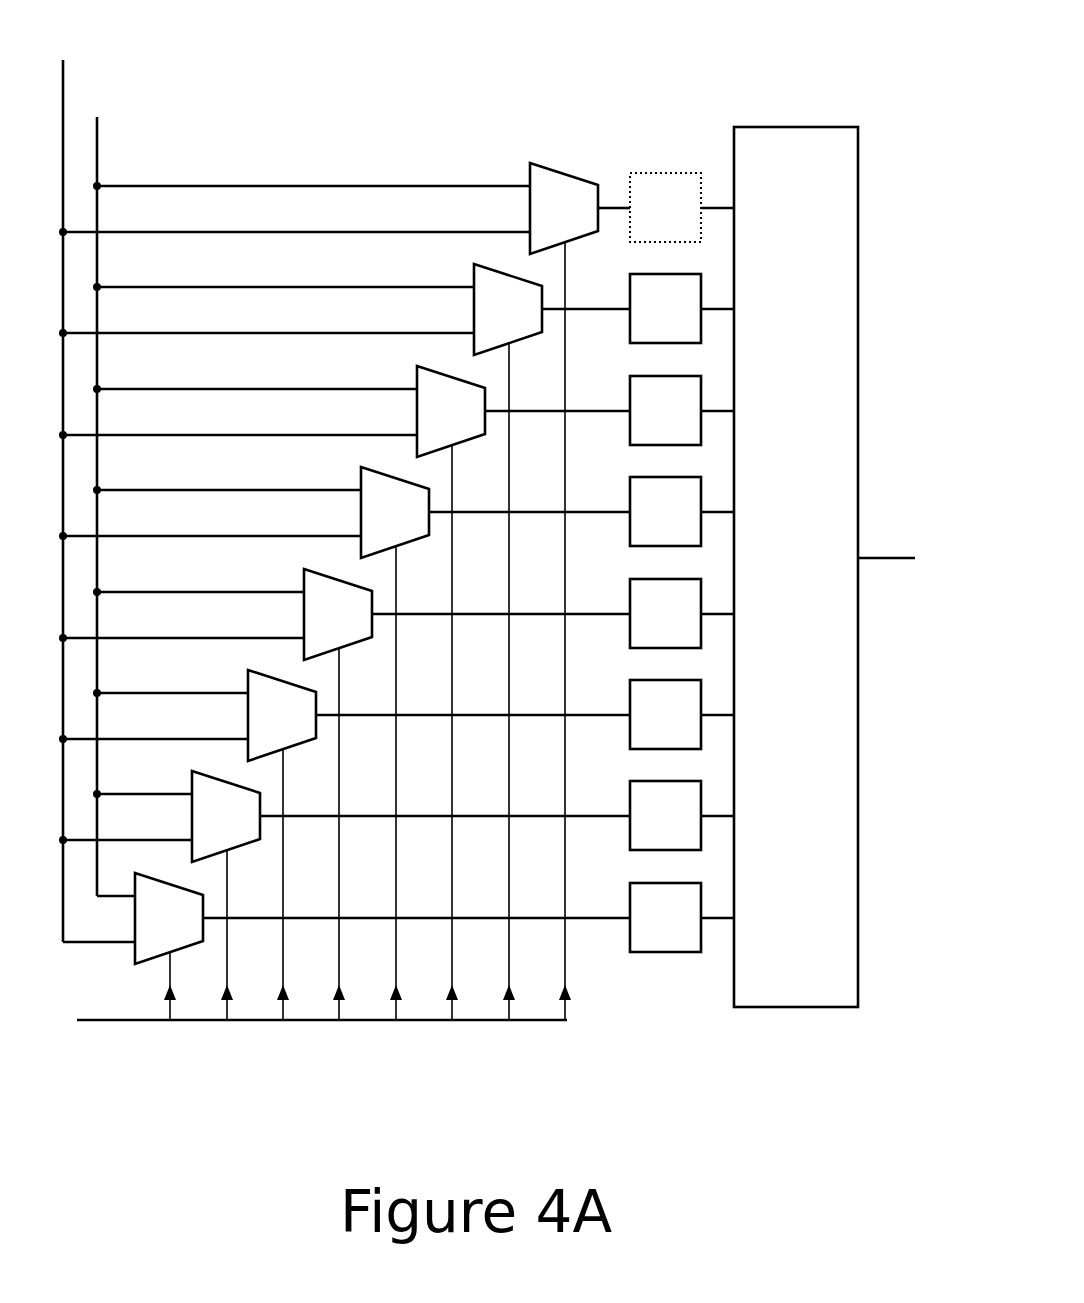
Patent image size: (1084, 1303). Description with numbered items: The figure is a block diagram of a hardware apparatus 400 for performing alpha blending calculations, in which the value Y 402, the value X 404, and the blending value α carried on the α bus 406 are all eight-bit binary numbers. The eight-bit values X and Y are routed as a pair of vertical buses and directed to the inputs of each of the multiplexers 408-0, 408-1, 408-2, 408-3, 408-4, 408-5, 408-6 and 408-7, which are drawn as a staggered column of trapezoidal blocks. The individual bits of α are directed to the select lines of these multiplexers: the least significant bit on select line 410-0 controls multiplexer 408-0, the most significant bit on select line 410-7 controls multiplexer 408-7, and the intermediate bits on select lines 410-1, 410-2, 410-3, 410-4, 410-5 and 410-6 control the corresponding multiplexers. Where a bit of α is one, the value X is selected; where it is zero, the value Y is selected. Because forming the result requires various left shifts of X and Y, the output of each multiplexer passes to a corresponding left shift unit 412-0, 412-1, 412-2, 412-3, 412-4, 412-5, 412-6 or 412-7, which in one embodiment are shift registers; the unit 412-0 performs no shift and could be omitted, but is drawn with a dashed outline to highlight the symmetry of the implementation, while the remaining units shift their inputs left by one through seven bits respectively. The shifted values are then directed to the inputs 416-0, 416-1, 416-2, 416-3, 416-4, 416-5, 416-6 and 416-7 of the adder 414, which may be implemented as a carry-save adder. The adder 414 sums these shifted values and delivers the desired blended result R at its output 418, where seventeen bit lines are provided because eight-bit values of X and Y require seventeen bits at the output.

The multiplier circuit 400 is at (350, 113).
The value Y 402 is at (83, 472).
The value X 404 is at (125, 478).
The alpha(7:0) select bus 406 is at (318, 1051).
The multiplexer 408-0 is at (344, 591).
The multiplexer 408-1 is at (302, 642).
The multiplexer 408-2 is at (274, 693).
The multiplexer 408-3 is at (246, 743).
The multiplexer 408-4 is at (217, 794).
The multiplexer 408-5 is at (189, 845).
The multiplexer 408-6 is at (161, 895).
The multiplexer 408-7 is at (138, 946).
The select signal alpha 0 410-0 is at (568, 995).
The select signal alpha 1 410-1 is at (512, 995).
The select signal alpha 2 410-2 is at (455, 995).
The select signal alpha 3 410-3 is at (399, 995).
The select signal alpha 4 410-4 is at (342, 995).
The select signal alpha 5 410-5 is at (286, 995).
The select signal alpha 6 410-6 is at (230, 995).
The select signal alpha 7 410-7 is at (173, 995).
The left shift unit 412-0 is at (649, 207).
The left shift unit 412-1 is at (621, 308).
The left shift unit 412-2 is at (593, 410).
The left shift unit 412-3 is at (565, 511).
The left shift unit 412-4 is at (536, 613).
The left shift unit 412-5 is at (508, 714).
The left shift unit 412-6 is at (480, 815).
The left shift unit 412-7 is at (452, 917).
The adder 414 is at (796, 601).
The adder input 416-0 is at (749, 206).
The adder input 416-1 is at (749, 307).
The adder input 416-2 is at (749, 409).
The adder input 416-3 is at (749, 510).
The adder input 416-4 is at (749, 612).
The adder input 416-5 is at (749, 713).
The adder input 416-6 is at (749, 814).
The adder input 416-7 is at (749, 916).
The output 418 is at (898, 535).